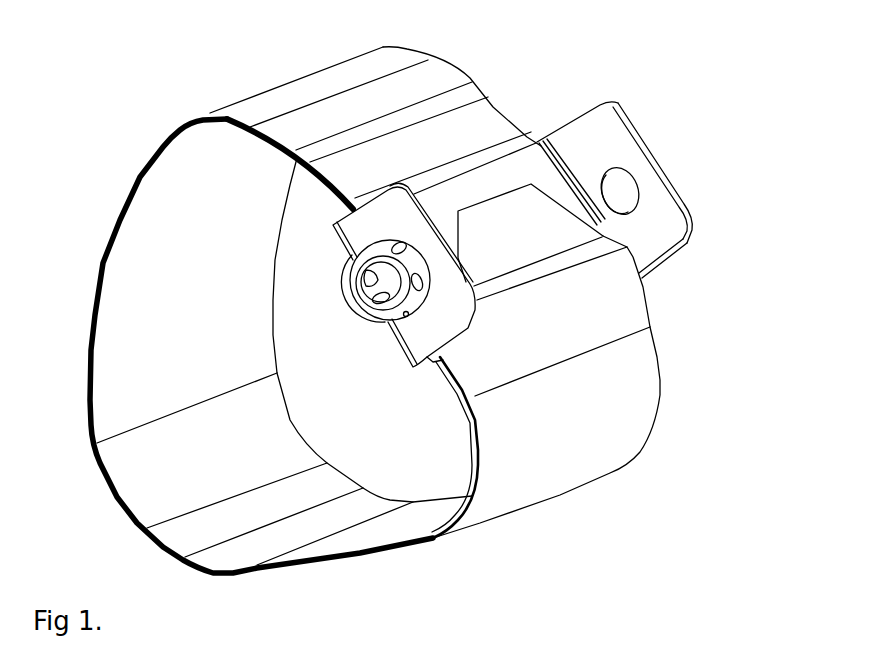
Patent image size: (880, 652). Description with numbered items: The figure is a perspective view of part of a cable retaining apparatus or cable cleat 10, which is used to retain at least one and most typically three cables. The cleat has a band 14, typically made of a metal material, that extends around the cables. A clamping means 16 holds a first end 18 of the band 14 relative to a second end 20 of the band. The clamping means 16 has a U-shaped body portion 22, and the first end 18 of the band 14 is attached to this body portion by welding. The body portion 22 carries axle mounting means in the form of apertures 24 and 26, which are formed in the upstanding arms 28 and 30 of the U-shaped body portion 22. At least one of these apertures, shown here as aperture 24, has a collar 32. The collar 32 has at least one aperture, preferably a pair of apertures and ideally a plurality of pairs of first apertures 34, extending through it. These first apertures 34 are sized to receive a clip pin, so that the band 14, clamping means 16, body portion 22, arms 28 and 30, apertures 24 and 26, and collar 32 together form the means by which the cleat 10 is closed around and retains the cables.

The cable cleat 10 is at (153, 110).
The band 14 is at (627, 403).
The clamping means 16 is at (723, 147).
The first end 18 is at (445, 355).
The second end 20 is at (523, 212).
The U-shaped body portion 22 is at (675, 237).
The aperture 24 is at (398, 284).
The aperture 26 is at (619, 183).
The upstanding arm 28 is at (360, 240).
The upstanding arm 30 is at (643, 167).
The collar 32 is at (376, 312).
The first apertures 34 is at (397, 324).